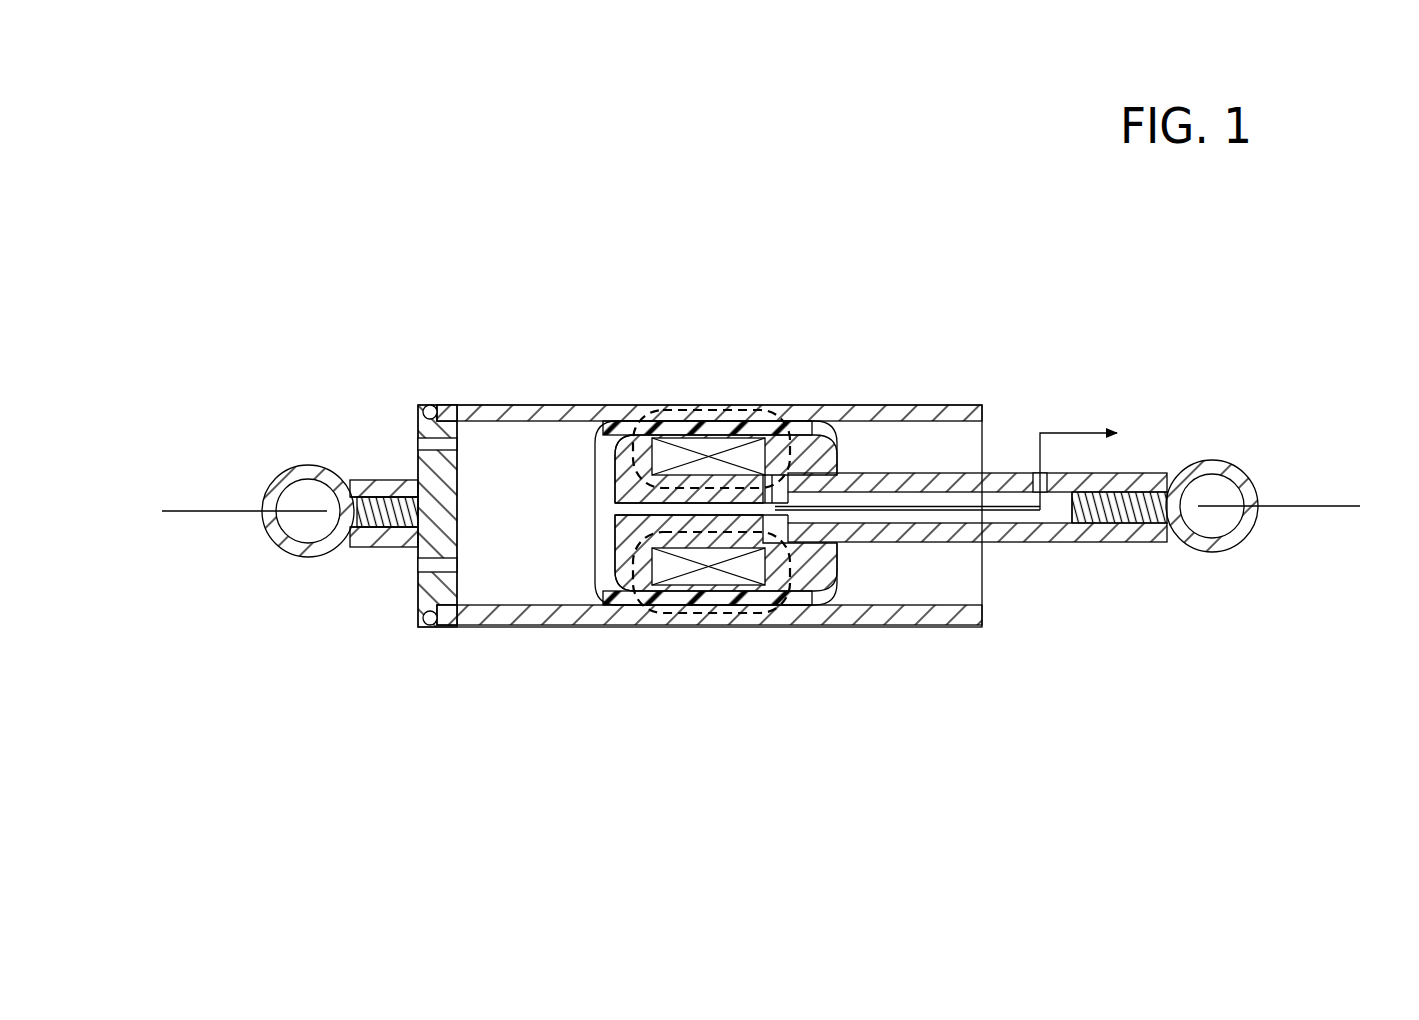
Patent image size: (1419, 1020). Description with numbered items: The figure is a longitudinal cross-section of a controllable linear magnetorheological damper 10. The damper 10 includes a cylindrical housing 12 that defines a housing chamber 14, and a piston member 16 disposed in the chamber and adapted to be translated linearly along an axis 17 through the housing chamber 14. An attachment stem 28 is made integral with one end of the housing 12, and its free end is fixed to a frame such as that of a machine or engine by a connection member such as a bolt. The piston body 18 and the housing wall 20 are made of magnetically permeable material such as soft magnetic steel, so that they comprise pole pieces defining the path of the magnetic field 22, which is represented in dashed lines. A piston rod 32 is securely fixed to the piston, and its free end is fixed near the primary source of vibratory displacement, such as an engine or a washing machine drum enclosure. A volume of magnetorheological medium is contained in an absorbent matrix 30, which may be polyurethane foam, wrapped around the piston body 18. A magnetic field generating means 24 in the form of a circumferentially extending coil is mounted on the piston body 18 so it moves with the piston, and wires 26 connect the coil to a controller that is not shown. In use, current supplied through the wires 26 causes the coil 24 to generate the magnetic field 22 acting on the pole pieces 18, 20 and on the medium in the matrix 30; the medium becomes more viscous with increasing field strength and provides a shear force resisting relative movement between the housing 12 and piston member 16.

The damper 10 is at (907, 260).
The cylindrical housing 12 is at (382, 407).
The housing chamber 14 is at (522, 560).
The piston member 16 is at (563, 473).
The axis 17 is at (1297, 506).
The piston body 18 is at (607, 477).
The housing wall 20 is at (695, 405).
The magnetic field 22 is at (648, 410).
The magnetic field generating means 24 is at (710, 440).
The wires 26 is at (1070, 432).
The attachment stem 28 is at (378, 533).
The absorbent matrix 30 is at (745, 430).
The piston rod 32 is at (1067, 543).